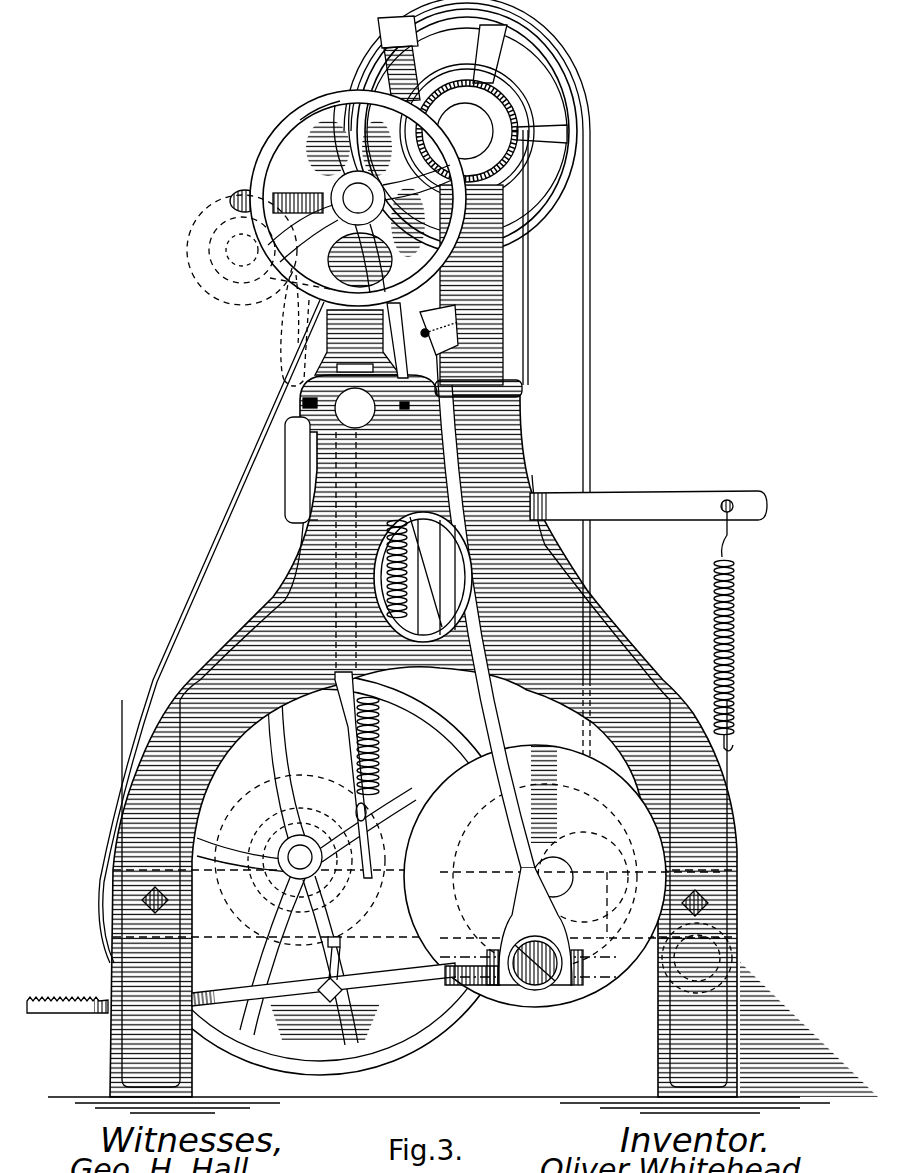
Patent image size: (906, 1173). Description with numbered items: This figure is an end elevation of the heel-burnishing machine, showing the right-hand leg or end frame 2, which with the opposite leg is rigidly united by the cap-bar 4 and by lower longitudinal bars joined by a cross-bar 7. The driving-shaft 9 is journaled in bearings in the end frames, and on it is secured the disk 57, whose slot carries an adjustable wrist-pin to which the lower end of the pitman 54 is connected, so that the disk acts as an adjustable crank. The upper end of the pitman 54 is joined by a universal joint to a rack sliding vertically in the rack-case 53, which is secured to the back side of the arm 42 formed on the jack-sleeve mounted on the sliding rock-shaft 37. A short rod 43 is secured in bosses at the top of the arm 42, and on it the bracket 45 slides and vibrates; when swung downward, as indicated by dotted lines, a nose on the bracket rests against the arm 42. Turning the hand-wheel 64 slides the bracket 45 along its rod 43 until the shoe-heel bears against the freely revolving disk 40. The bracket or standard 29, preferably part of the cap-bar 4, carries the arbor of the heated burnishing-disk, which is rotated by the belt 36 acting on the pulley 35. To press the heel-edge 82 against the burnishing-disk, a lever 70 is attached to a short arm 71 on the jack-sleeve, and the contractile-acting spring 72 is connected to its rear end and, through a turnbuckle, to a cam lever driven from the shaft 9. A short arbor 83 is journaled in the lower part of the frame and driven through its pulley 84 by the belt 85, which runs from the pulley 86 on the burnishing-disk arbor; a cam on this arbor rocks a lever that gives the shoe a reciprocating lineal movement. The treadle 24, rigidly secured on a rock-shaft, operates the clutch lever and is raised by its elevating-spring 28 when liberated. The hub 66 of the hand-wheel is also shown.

The right-hand leg or end frame 2 is at (407, 736).
The cap-bar 4 is at (476, 338).
The cross-bar 7 is at (370, 880).
The driving-shaft 9 is at (553, 877).
The treadle 24 is at (268, 996).
The elevating-spring 28 is at (354, 838).
The bracket or standard 29 is at (421, 333).
The pulley 35 is at (572, 182).
The belt 36 is at (420, 590).
The sliding rock-shaft 37 is at (398, 260).
The disk 40 is at (342, 101).
The arm 42 is at (336, 338).
The short rod 43 is at (366, 264).
The bracket 45 is at (261, 250).
The rack-case 53 is at (418, 50).
The pitman 54 is at (509, 667).
The disk 57 is at (562, 875).
The hand-wheel 64 is at (348, 198).
The hub 66 is at (358, 198).
The lever 70 is at (648, 524).
The short arm 71 is at (301, 470).
The contractile-acting spring 72 is at (734, 655).
The heel-edge 82 is at (300, 860).
The short arbor 83 is at (300, 857).
The pulley 84 is at (320, 875).
The belt 85 is at (524, 310).
The pulley 86 is at (518, 108).